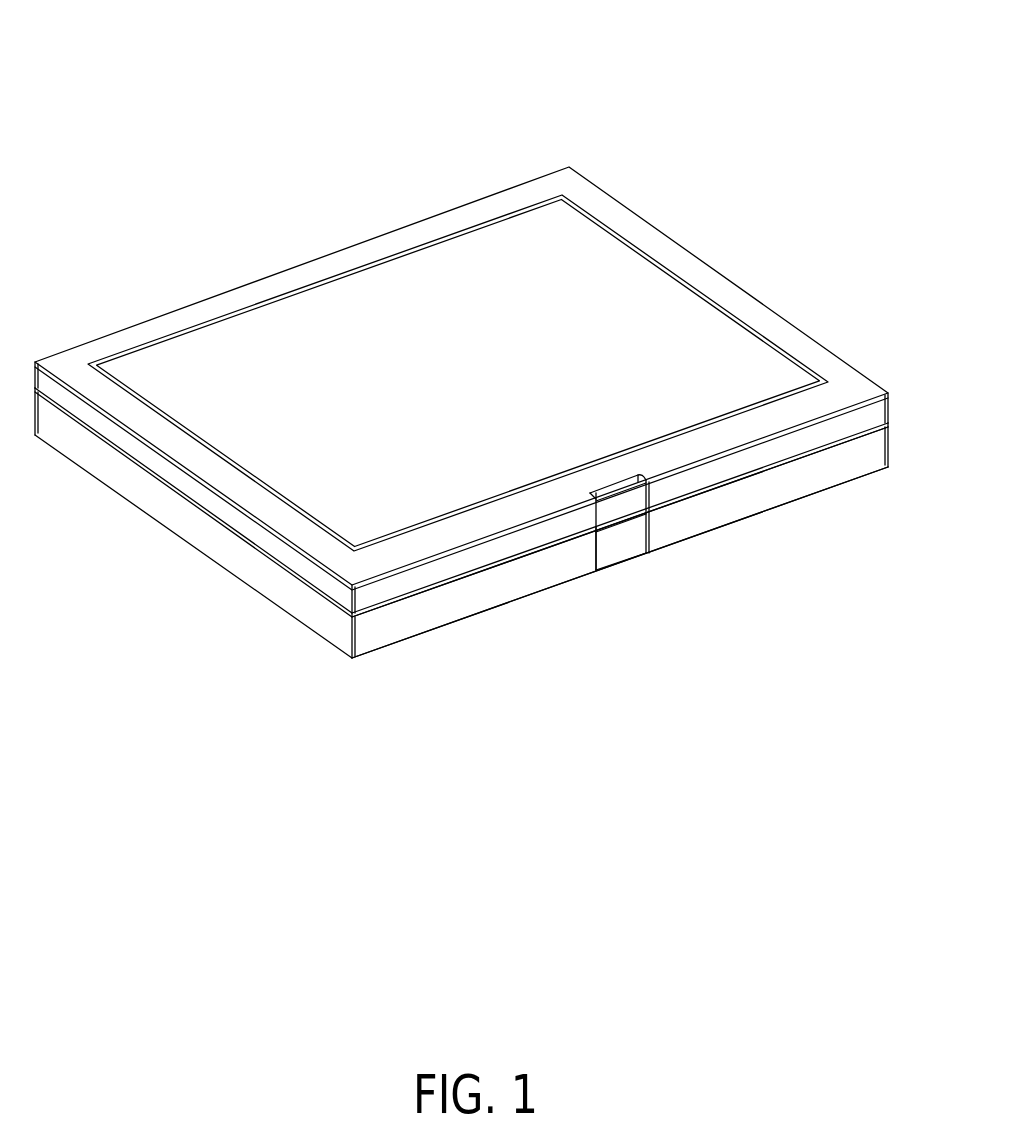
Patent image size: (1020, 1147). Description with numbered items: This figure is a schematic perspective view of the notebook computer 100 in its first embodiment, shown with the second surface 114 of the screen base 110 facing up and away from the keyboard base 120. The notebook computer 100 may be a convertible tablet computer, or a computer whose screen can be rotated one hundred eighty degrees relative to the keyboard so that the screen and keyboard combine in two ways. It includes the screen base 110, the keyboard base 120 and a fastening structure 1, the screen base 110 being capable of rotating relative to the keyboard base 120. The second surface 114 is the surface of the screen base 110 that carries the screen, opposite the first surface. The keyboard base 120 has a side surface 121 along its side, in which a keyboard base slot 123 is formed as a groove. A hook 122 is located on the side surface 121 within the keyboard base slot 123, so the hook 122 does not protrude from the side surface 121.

The notebook computer 100 is at (461, 331).
The screen base 110 is at (461, 382).
The second surface 114 is at (676, 247).
The keyboard base 120 is at (461, 523).
The side surface 121 is at (752, 503).
The hook 122 is at (618, 552).
The keyboard base slot 123 is at (580, 558).
The fastening structure 1 is at (596, 529).